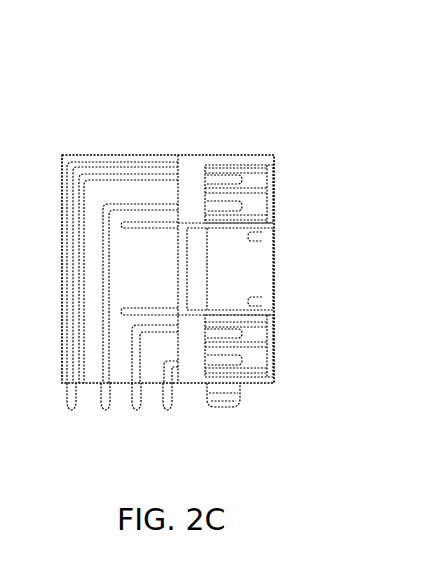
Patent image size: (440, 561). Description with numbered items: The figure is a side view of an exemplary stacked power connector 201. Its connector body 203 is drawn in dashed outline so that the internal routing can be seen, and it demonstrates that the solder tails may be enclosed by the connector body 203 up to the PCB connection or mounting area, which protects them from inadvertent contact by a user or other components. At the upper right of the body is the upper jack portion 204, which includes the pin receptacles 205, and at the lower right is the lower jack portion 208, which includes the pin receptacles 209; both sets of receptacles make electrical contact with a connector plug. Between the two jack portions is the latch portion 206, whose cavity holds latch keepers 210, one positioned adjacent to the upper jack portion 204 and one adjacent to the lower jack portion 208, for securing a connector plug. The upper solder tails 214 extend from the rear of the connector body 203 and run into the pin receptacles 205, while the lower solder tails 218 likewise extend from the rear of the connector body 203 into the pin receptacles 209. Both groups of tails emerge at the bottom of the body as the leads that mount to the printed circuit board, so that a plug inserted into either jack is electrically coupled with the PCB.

The stacked power connector 201 is at (102, 79).
The connector body 203 is at (166, 276).
The upper jack portion 204 is at (287, 165).
The pin receptacles 205 is at (256, 212).
The latch portion 206 is at (287, 236).
The lower jack portion 208 is at (287, 308).
The pin receptacles 209 is at (262, 332).
The latch keepers 210 is at (256, 232).
The upper solder tails 214 is at (140, 203).
The lower solder tails 218 is at (167, 403).